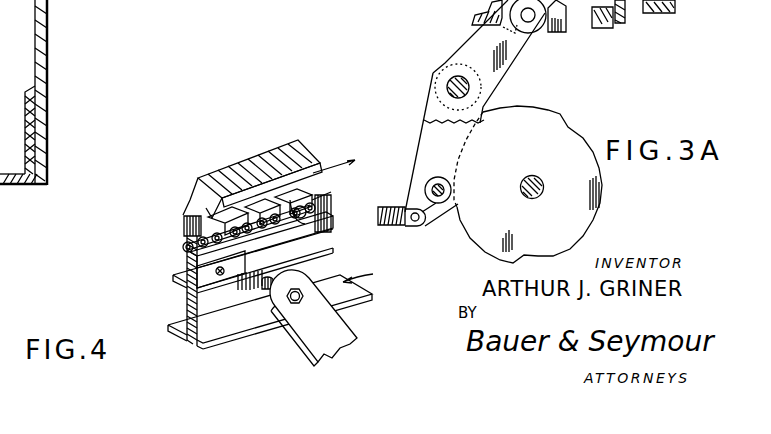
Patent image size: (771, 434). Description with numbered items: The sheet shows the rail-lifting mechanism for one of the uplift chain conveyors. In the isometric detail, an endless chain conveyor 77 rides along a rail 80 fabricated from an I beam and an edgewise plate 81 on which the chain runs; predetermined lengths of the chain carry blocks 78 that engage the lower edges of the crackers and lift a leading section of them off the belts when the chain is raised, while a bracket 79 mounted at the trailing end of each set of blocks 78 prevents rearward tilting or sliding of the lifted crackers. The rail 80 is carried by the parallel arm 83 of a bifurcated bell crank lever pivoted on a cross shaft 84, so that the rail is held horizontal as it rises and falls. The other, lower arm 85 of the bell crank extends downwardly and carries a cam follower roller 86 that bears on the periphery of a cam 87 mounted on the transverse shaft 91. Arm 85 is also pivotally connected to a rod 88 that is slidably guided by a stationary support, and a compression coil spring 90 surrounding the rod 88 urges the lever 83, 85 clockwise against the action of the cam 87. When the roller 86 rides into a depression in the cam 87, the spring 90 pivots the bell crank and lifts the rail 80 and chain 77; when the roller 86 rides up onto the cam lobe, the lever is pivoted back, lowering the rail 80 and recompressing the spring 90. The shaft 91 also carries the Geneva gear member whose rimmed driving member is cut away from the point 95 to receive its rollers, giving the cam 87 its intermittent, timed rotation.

In FIG. 4, the endless chain conveyor 77 is at (315, 223).
In FIG. 4, the blocks 78 is at (283, 188).
In FIG. 4, the bracket 79 is at (188, 236).
In FIG. 3A, the rail 80 is at (490, 13).
In FIG. 4, the rail 80 is at (368, 274).
In FIG. 4, the edgewise plate 81 is at (326, 200).
In FIG. 3A, the parallel arm of bell crank lever 83 is at (516, 43).
In FIG. 4, the parallel arm of bell crank lever 83 is at (333, 338).
In FIG. 3A, the cross shaft 84 is at (448, 88).
In FIG. 3A, the lower arm of bell crank lever 85 is at (420, 143).
In FIG. 3A, the cam follower roller 86 is at (442, 203).
In FIG. 3A, the cam 87 is at (532, 120).
In FIG. 3A, the rod 88 is at (383, 209).
In FIG. 3A, the compression coil spring 90 is at (385, 228).
In FIG. 3A, the transverse shaft 91 is at (545, 183).
In FIG. 3A, the cut-away point of rimmed member flange 95 is at (613, 20).